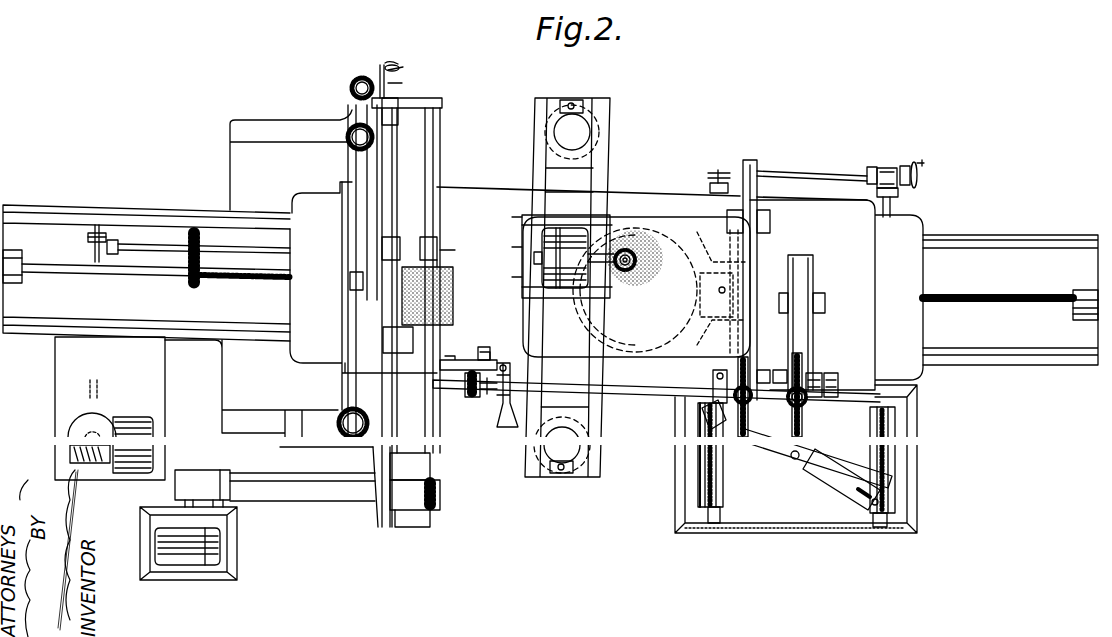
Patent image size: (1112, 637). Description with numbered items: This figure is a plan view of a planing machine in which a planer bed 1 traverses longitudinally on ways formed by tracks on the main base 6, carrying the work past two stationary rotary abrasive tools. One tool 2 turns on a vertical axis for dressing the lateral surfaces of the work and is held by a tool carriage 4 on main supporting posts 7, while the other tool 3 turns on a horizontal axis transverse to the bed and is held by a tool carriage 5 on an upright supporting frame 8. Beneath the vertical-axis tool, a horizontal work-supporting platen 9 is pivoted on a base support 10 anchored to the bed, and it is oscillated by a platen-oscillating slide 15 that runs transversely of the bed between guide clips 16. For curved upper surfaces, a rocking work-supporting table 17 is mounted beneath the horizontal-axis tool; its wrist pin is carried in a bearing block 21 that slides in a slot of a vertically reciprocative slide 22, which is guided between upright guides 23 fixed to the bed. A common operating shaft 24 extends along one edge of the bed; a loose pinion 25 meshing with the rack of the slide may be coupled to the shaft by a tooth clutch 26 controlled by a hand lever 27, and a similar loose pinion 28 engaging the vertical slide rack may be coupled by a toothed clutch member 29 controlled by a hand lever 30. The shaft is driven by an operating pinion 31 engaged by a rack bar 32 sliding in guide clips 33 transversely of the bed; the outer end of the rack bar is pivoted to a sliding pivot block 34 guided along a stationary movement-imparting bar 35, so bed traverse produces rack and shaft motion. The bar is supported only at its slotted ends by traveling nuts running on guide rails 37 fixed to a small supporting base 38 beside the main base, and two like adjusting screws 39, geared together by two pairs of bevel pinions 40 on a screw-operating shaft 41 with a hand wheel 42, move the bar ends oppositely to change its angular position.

The planer bed 1 is at (493, 207).
The rotary tool 2 is at (622, 237).
The rotary tool 3 is at (447, 260).
The tool carriage 4 is at (592, 242).
The tool carriage 5 is at (402, 250).
The main base 6 is at (272, 152).
The main supporting posts 7 is at (573, 130).
The upright supporting frame 8 is at (325, 122).
The work-supporting platen 9 is at (653, 290).
The base support 10 is at (662, 233).
The platen-oscillating slide 15 is at (750, 267).
The guide clips 16 is at (765, 224).
The rocking work-supporting table 17 is at (423, 294).
The bearing block 21 is at (472, 360).
The vertically reciprocative slide 22 is at (453, 360).
The upright guides 23 is at (215, 458).
The operating shaft 24 is at (628, 397).
The pinion 25 is at (723, 430).
The tooth clutch 26 is at (730, 373).
The hand lever 27 is at (700, 428).
The pinion 28 is at (470, 397).
The toothed clutch member 29 is at (493, 397).
The hand lever 30 is at (503, 412).
The operating pinion 31 is at (800, 405).
The rack bar 32 is at (805, 435).
The guide clips 33 is at (823, 302).
The sliding pivot block 34 is at (780, 466).
The movement-imparting bar 35 is at (830, 475).
The guide rail 37 is at (702, 458).
The supporting base 38 is at (843, 510).
The adjusting screws 39 is at (890, 212).
The bevel pinions 40 is at (713, 173).
The screw-operating shaft 41 is at (827, 172).
The hand wheel 42 is at (918, 163).